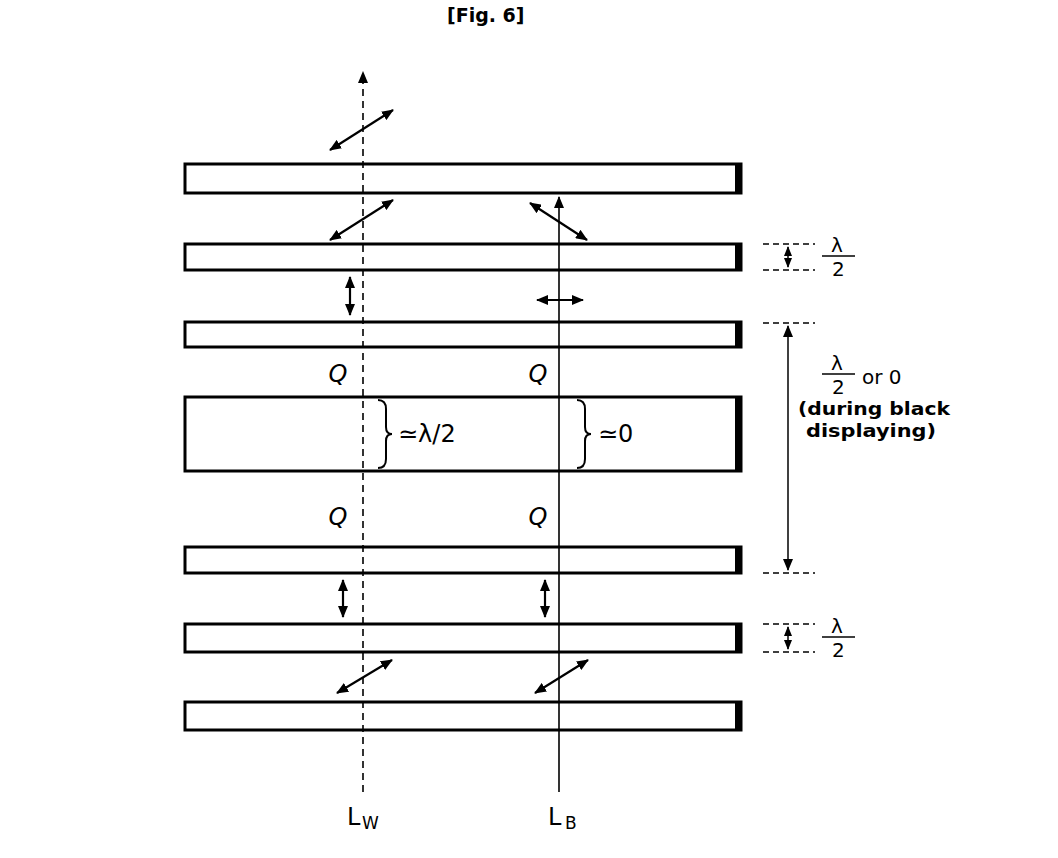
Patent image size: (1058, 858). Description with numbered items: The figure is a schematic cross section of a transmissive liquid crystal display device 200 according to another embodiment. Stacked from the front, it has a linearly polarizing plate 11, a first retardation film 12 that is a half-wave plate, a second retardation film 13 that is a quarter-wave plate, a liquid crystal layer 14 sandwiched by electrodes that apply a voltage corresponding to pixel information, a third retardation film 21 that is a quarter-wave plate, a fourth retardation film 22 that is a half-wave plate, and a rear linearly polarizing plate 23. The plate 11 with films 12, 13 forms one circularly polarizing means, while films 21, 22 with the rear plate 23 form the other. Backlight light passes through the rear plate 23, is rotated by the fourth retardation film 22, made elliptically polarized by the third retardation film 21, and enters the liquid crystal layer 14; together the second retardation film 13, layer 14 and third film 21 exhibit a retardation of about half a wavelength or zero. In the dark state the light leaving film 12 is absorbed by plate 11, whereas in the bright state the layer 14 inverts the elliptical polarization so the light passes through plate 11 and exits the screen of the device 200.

The liquid crystal display device 200 is at (133, 119).
The linearly polarizing plate 11 is at (185, 180).
The first retardation film 12 is at (185, 257).
The second retardation film 13 is at (185, 334).
The liquid crystal layer 14 is at (185, 433).
The third retardation film 21 is at (185, 560).
The fourth retardation film 22 is at (185, 639).
The rear linearly polarizing plate 23 is at (185, 717).